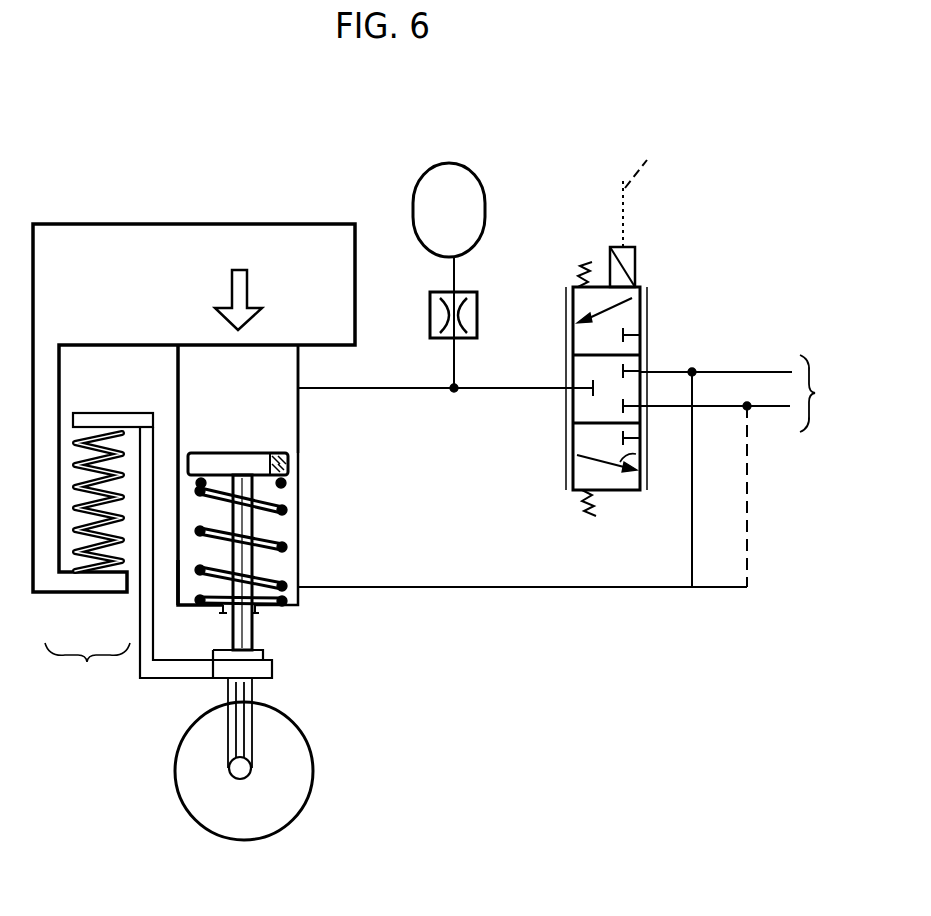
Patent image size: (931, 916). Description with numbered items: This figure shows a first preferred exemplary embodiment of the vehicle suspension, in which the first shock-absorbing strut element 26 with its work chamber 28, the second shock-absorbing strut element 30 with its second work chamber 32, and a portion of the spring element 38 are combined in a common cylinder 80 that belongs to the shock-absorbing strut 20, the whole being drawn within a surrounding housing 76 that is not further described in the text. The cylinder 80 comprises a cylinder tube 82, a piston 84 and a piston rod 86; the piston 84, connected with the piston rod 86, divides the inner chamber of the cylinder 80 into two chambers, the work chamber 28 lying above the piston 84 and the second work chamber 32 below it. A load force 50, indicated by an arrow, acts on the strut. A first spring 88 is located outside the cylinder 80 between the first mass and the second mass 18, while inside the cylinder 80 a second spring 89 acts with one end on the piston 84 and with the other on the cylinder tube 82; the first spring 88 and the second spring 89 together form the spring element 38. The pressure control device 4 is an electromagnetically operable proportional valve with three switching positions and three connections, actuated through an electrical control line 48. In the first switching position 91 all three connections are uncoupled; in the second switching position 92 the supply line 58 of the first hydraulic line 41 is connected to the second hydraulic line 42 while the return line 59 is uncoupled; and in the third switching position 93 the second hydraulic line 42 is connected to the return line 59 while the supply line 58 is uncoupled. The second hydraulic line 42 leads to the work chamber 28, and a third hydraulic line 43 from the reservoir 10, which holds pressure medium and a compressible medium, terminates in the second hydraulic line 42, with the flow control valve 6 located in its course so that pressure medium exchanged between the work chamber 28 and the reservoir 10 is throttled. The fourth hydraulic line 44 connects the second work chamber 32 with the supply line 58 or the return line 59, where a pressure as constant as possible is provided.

The pressure control device 4 is at (565, 448).
The flow control valve 6 is at (430, 304).
The reservoir 10 is at (442, 172).
The second mass 18 is at (279, 833).
The shock-absorbing strut 20 is at (157, 706).
The first shock-absorbing strut element 26 is at (298, 368).
The work chamber 28 is at (221, 475).
The second shock-absorbing strut element 30 is at (298, 567).
The second work chamber 32 is at (288, 528).
The spring element 38 is at (158, 558).
The first hydraulic line 41 is at (823, 393).
The second hydraulic line 42 is at (488, 388).
The third hydraulic line 43 is at (454, 364).
The fourth hydraulic line 44 is at (510, 588).
The electrical control line 48 is at (647, 216).
The load force 50 is at (252, 286).
The supply line 58 is at (752, 347).
The return line 59 is at (762, 408).
The housing 76 is at (126, 224).
The cylinder 80 is at (304, 399).
The cylinder tube 82 is at (298, 426).
The piston 84 is at (288, 462).
The piston rod 86 is at (290, 492).
The first spring 88 is at (76, 570).
The second spring 89 is at (193, 573).
The first switching position 91 is at (640, 352).
The second switching position 92 is at (640, 308).
The third switching position 93 is at (638, 464).